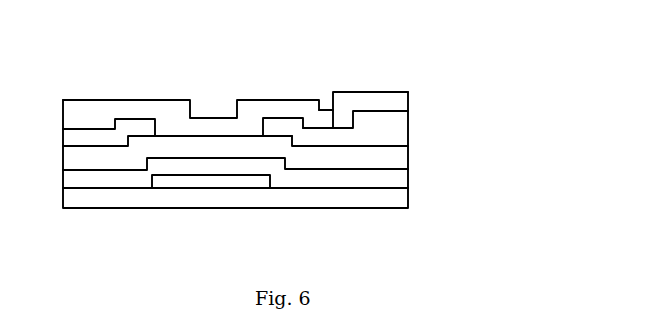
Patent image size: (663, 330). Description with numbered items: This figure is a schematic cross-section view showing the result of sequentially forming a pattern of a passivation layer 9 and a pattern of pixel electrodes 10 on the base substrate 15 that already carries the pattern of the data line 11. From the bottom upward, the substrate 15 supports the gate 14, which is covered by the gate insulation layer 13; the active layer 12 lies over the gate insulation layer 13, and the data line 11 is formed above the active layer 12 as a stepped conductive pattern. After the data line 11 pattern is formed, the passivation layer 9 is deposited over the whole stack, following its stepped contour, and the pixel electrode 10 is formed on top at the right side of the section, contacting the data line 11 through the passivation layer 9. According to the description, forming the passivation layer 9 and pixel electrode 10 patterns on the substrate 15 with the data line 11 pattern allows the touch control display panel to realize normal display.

The passivation layer 9 is at (148, 110).
The pixel electrode 10 is at (363, 100).
The data line 11 is at (402, 137).
The active layer 12 is at (302, 162).
The gate insulation layer 13 is at (327, 180).
The gate 14 is at (170, 182).
The substrate 15 is at (283, 162).